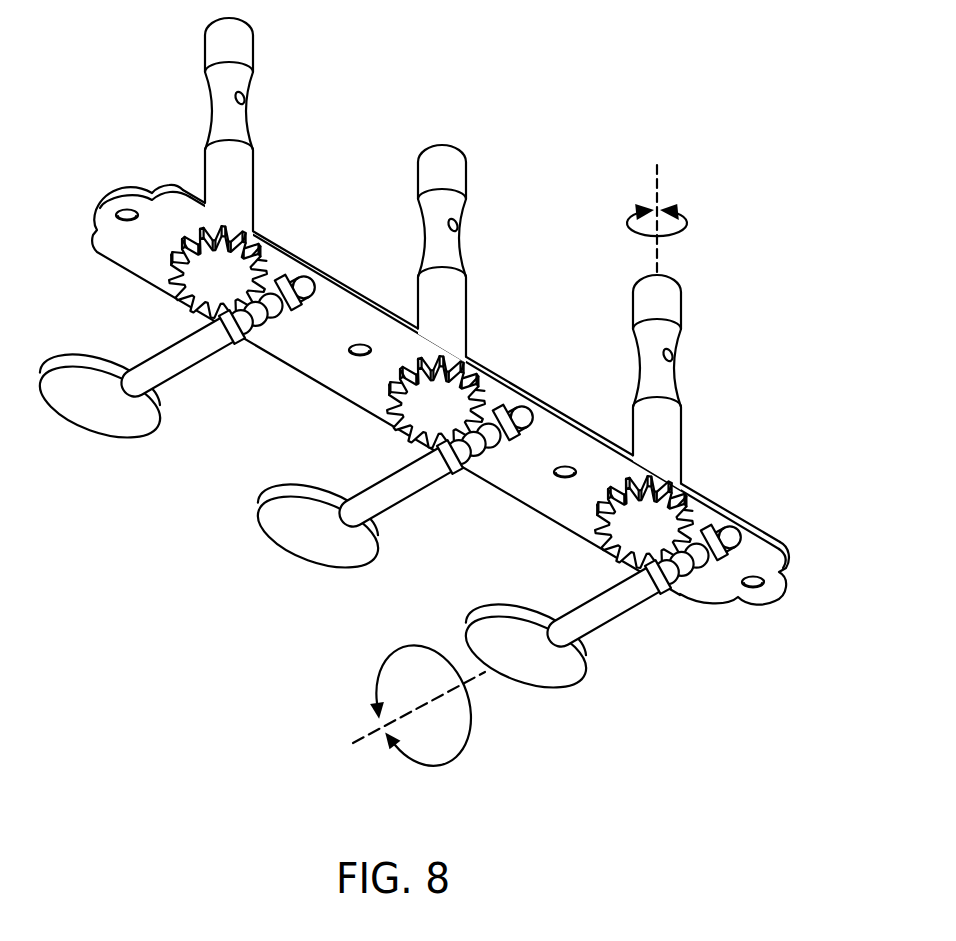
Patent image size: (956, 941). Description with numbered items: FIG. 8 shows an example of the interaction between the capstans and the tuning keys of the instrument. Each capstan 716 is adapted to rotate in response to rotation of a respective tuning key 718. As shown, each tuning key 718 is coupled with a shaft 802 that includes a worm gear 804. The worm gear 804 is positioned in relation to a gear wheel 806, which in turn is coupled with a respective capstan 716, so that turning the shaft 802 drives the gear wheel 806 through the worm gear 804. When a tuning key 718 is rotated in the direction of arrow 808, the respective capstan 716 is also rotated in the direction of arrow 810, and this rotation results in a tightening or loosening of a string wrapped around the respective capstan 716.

The capstan 716 is at (662, 435).
The tuning key 718 is at (473, 618).
The shaft 802 is at (597, 608).
The worm gear 804 is at (687, 563).
The gear wheel 806 is at (644, 538).
The arrow 808 is at (376, 695).
The arrow 810 is at (687, 222).